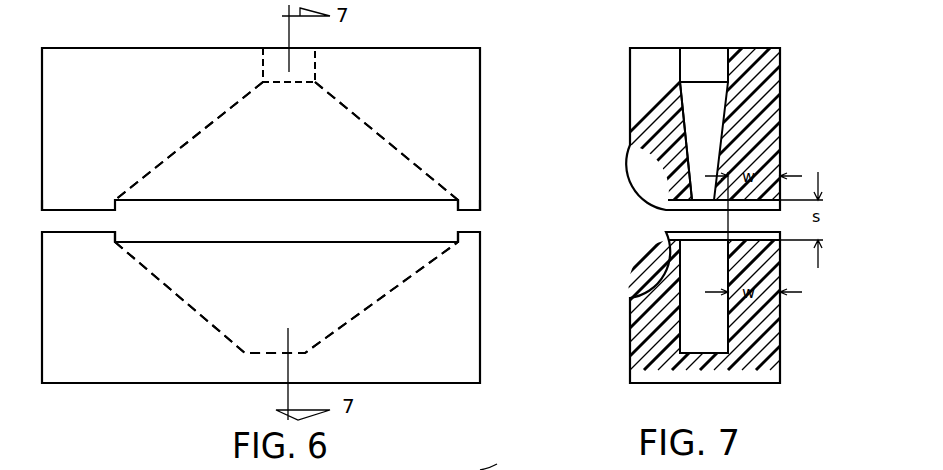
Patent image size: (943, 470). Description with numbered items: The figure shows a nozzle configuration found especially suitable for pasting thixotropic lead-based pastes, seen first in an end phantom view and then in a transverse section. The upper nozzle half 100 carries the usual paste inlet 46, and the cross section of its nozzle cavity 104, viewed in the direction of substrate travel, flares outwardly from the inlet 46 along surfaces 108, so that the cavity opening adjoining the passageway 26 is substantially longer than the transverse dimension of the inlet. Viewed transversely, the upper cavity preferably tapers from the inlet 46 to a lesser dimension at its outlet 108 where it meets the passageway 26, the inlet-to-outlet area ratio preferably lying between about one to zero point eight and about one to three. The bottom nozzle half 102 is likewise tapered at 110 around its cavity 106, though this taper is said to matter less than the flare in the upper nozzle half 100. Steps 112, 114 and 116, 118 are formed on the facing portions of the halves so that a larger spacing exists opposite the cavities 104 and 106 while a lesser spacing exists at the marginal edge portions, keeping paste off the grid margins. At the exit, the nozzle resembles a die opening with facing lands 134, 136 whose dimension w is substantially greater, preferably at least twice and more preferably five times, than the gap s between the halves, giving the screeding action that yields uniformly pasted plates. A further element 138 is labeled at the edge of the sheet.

In FIG. 6, the upper nozzle half 100 is at (97, 72).
In FIG. 7, the upper nozzle half 100 is at (762, 73).
In FIG. 6, the bottom nozzle half 102 is at (460, 366).
In FIG. 7, the bottom nozzle half 102 is at (760, 366).
In FIG. 6, the nozzle cavity 104 is at (366, 181).
In FIG. 7, the nozzle cavity 104 is at (730, 111).
In FIG. 6, the cavity 106 is at (260, 283).
In FIG. 7, the cavity 106 is at (724, 336).
In FIG. 6, the flared surfaces 108 is at (187, 142).
In FIG. 7, the flared surfaces 108 is at (700, 193).
In FIG. 6, the taper 110 is at (185, 302).
In FIG. 6, the step 112 is at (51, 212).
In FIG. 6, the step 114 is at (80, 232).
In FIG. 6, the step 116 is at (470, 210).
In FIG. 6, the step 118 is at (462, 234).
In FIG. 6, the passageway 26 is at (250, 231).
In FIG. 7, the passageway 26 is at (718, 231).
In FIG. 6, the paste inlet 46 is at (265, 80).
In FIG. 7, the paste inlet 46 is at (682, 66).
In FIG. 7, the land 134 is at (766, 200).
In FIG. 7, the land 136 is at (775, 243).
In FIG. 6, the reference element 138 is at (509, 460).